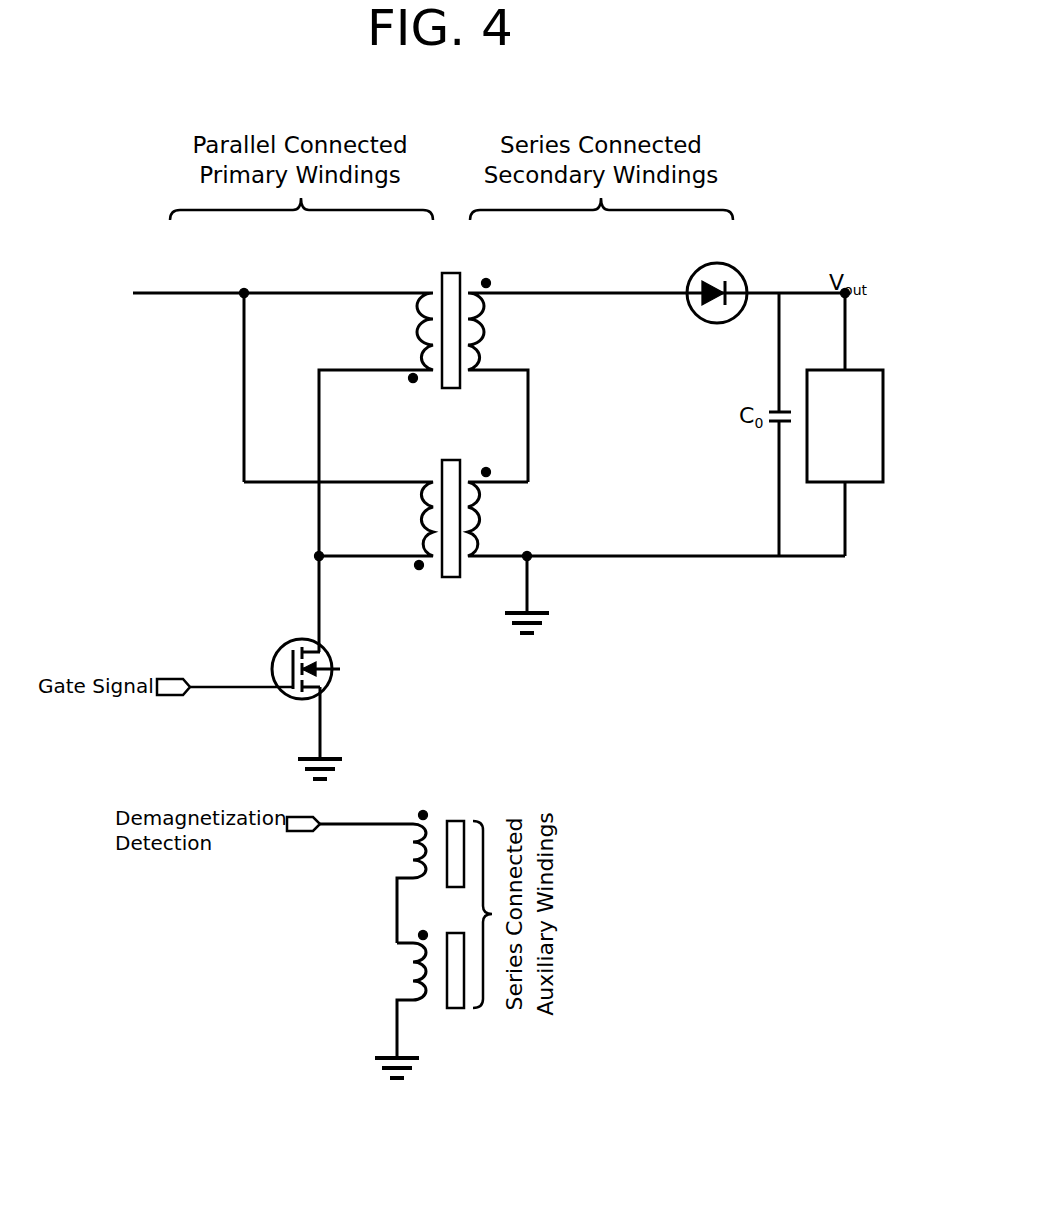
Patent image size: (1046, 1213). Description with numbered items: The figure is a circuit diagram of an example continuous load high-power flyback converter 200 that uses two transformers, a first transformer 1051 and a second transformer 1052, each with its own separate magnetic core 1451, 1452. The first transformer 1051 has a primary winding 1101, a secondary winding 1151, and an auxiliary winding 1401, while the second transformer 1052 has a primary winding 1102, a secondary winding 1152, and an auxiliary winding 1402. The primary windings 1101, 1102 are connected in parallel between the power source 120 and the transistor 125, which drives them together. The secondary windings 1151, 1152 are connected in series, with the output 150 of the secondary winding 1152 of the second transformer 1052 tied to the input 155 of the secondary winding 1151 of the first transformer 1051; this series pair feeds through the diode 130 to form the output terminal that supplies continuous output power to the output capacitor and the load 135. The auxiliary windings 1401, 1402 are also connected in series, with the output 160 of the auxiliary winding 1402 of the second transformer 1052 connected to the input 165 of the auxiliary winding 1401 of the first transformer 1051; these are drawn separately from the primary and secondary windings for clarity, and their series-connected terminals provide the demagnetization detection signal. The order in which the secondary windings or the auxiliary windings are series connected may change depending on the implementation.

The continuous load high-power flyback converter 200 is at (805, 232).
The power source 120 is at (176, 289).
The primary winding 1101 is at (388, 344).
The primary winding 1102 is at (388, 528).
The secondary winding 1151 is at (550, 344).
The secondary winding 1152 is at (550, 524).
The magnetic core 1451 is at (447, 281).
The magnetic core 1452 is at (450, 568).
The first transformer 1051 is at (470, 273).
The second transformer 1052 is at (432, 470).
The input of the secondary winding 155 is at (552, 370).
The output of the secondary winding 150 is at (552, 482).
The diode 130 is at (739, 358).
The load 135 is at (866, 454).
The transistor 125 is at (274, 644).
The auxiliary winding 1401 is at (396, 866).
The auxiliary winding 1402 is at (396, 989).
The input of the auxiliary winding 165 is at (372, 880).
The output of the auxiliary winding 160 is at (372, 943).